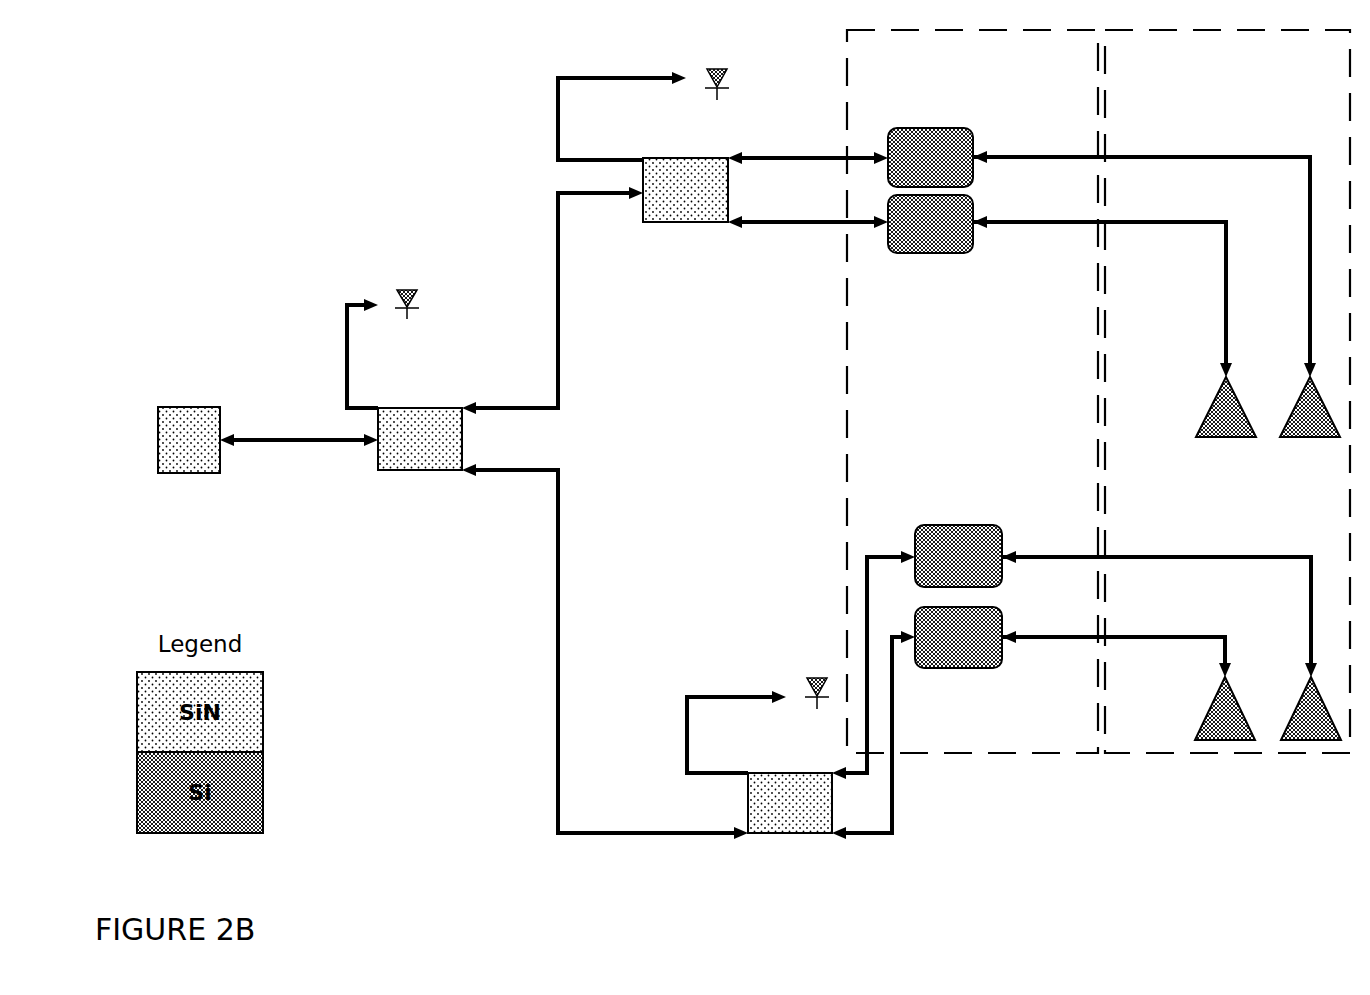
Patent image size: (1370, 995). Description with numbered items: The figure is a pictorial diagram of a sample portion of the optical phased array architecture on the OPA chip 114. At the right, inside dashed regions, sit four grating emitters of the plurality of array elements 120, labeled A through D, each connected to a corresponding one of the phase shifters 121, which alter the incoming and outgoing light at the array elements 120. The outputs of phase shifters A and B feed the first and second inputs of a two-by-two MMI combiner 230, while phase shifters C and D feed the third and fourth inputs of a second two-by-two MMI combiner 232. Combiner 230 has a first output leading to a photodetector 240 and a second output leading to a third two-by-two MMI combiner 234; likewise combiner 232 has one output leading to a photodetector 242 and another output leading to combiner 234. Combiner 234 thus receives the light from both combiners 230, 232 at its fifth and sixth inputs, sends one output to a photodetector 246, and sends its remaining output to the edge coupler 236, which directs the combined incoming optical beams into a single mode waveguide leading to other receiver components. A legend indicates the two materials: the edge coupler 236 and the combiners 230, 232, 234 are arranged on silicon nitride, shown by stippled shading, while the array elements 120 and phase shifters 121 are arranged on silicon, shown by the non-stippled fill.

The OPA chip 114 is at (735, 463).
The array elements 120 is at (1227, 391).
The phase shifters 121 is at (972, 391).
The 2×2 MMI combiner 230 is at (687, 157).
The 2×2 MMI combiner 232 is at (768, 835).
The 2×2 MMI combiner 234 is at (397, 472).
The edge coupler 236 is at (198, 422).
The photodetector 240 is at (717, 67).
The photodetector 242 is at (817, 676).
The photodetector 246 is at (422, 300).